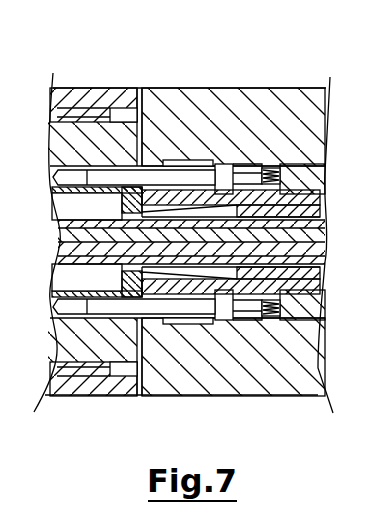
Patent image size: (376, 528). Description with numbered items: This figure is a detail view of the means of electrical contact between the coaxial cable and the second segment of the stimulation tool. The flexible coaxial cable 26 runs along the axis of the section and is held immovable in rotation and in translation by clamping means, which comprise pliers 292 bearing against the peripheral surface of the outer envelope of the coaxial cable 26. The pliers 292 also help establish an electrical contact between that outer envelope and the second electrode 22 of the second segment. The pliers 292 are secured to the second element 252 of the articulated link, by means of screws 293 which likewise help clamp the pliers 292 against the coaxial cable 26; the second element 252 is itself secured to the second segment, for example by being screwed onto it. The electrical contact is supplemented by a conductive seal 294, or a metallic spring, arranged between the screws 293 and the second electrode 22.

The second electrode 22 is at (312, 168).
The flexible coaxial cable 26 is at (329, 175).
The second element 252 is at (100, 140).
The pliers 292 is at (187, 192).
The screws 293 is at (206, 195).
The conductive seal 294 is at (256, 172).